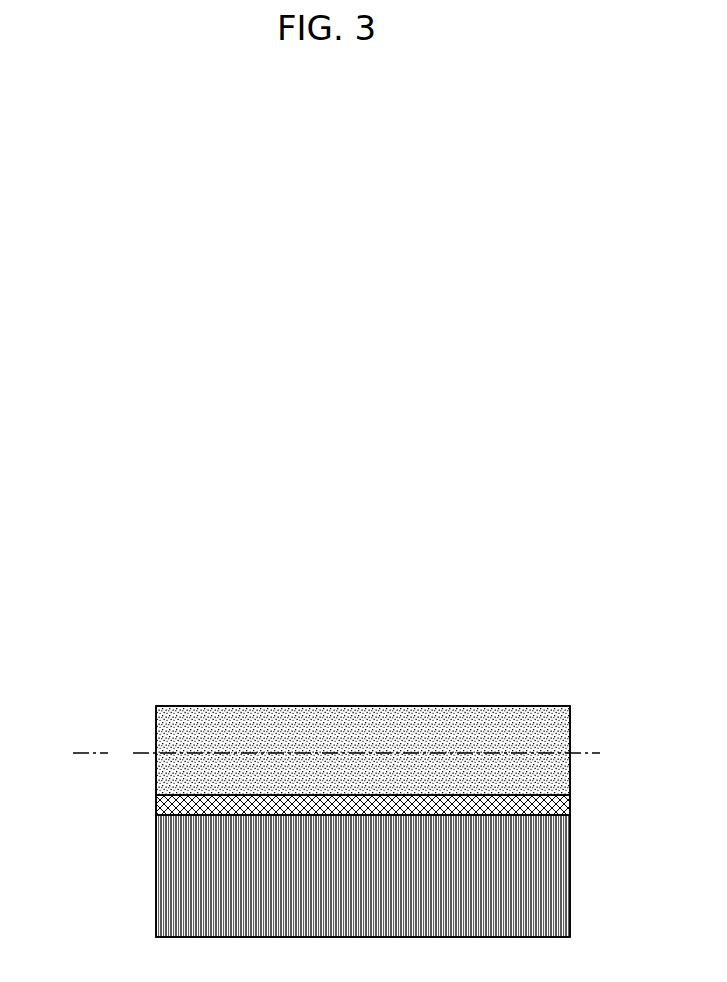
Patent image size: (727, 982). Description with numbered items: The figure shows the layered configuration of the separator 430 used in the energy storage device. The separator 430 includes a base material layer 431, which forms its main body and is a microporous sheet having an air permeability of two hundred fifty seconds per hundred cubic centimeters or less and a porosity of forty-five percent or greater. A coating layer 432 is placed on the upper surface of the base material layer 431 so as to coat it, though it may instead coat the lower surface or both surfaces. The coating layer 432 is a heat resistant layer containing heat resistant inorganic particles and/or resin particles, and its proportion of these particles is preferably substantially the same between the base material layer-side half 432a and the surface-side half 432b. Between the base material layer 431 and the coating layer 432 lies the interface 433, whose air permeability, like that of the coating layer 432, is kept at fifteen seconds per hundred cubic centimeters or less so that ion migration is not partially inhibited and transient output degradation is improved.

The separator 430 is at (638, 652).
The base material layer 431 is at (553, 873).
The coating layer 432 is at (560, 730).
The base material layer-side half 432a is at (123, 753).
The surface-side half 432b is at (123, 706).
The interface 433 is at (570, 802).